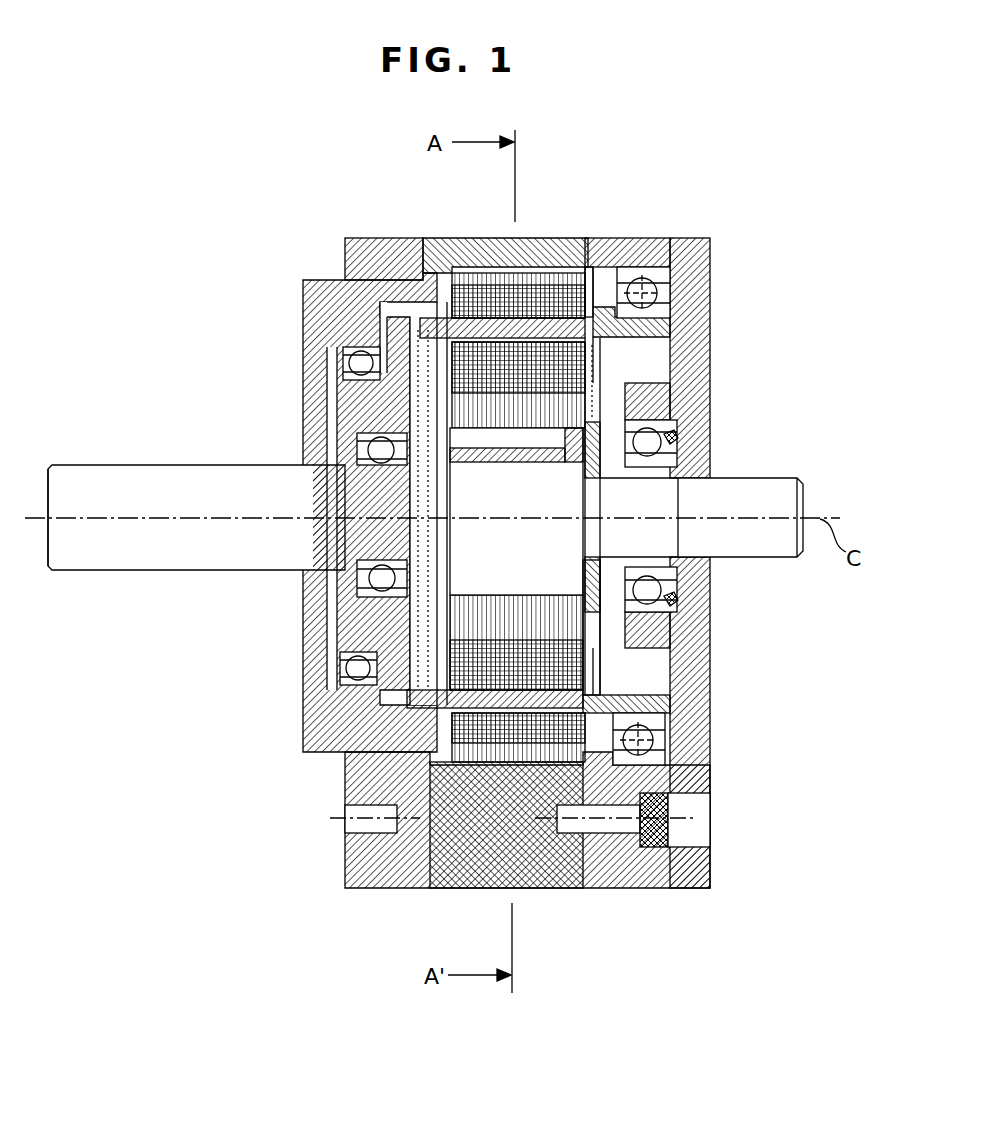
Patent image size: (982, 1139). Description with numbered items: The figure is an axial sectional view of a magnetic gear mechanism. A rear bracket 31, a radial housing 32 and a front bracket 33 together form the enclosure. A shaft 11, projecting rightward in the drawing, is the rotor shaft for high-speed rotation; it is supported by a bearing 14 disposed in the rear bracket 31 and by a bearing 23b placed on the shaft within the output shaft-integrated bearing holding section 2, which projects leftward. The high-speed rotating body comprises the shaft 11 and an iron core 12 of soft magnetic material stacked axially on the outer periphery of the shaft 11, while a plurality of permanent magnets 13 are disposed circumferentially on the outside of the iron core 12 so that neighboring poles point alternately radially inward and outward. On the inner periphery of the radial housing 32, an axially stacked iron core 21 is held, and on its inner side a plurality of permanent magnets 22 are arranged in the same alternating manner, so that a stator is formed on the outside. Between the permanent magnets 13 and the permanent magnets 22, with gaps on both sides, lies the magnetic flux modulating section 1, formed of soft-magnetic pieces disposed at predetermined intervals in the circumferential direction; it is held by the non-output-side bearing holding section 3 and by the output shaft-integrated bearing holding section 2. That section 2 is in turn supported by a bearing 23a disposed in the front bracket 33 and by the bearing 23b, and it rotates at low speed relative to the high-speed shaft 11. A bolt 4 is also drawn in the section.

The magnetic flux modulating section 1 is at (545, 330).
The output shaft-integrated bearing holding section 2 is at (330, 603).
The non-output-side bearing holding section 3 is at (652, 338).
The bolt 4 is at (652, 757).
The shaft 11 is at (740, 490).
The iron core 12 is at (600, 612).
The permanent magnets 13 is at (590, 672).
The bearing 14 is at (690, 438).
The iron core 21 is at (592, 270).
The permanent magnets 22 is at (622, 262).
The bearing 23a is at (343, 364).
The bearing 23b is at (372, 456).
The rear bracket 31 is at (717, 265).
The radial housing 32 is at (433, 246).
The front bracket 33 is at (352, 262).